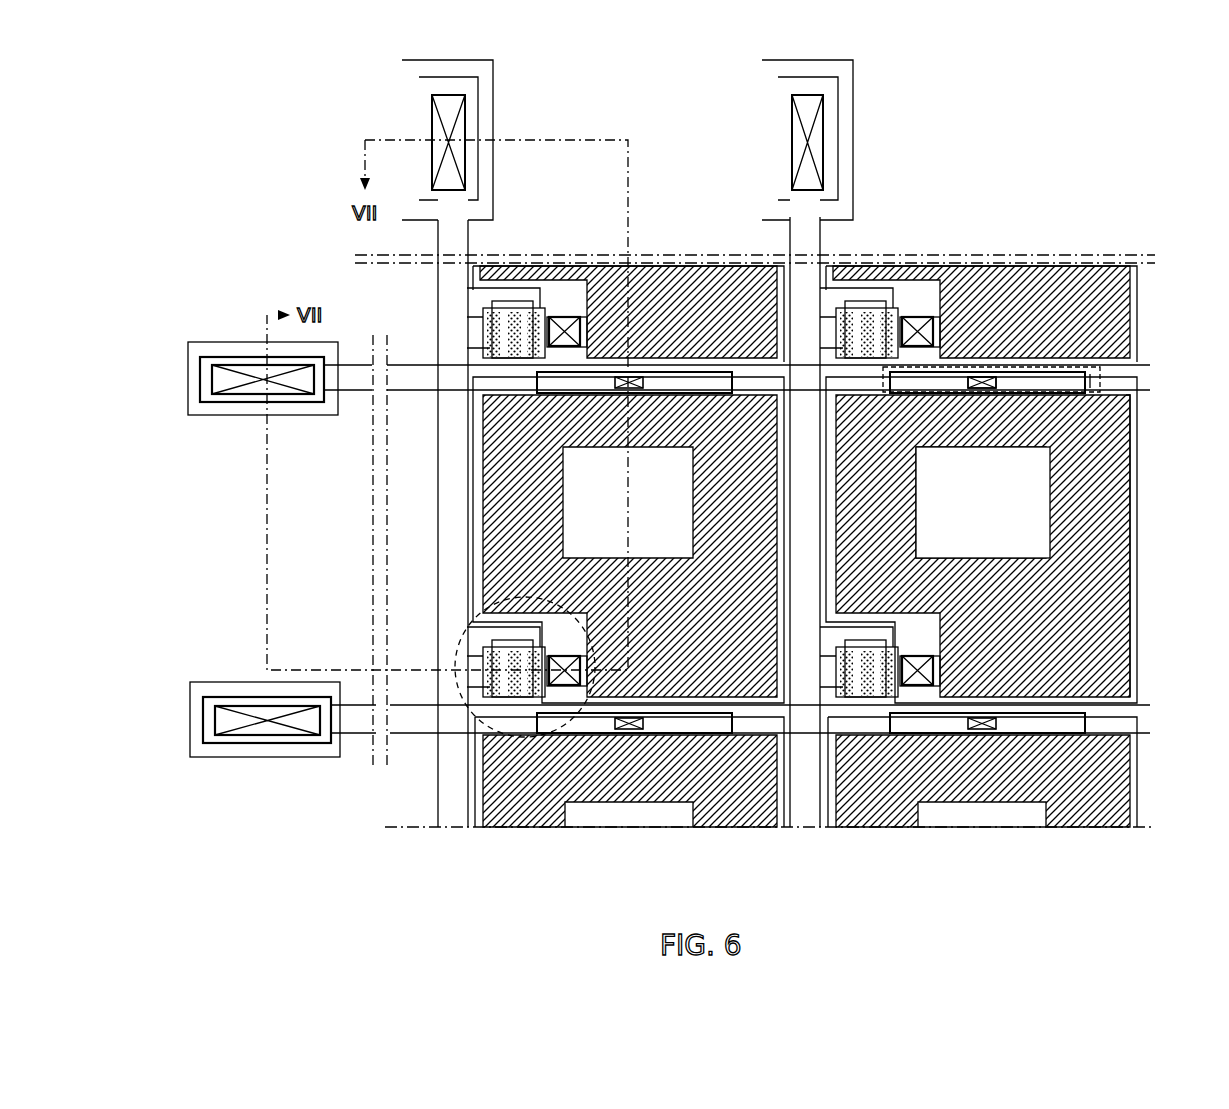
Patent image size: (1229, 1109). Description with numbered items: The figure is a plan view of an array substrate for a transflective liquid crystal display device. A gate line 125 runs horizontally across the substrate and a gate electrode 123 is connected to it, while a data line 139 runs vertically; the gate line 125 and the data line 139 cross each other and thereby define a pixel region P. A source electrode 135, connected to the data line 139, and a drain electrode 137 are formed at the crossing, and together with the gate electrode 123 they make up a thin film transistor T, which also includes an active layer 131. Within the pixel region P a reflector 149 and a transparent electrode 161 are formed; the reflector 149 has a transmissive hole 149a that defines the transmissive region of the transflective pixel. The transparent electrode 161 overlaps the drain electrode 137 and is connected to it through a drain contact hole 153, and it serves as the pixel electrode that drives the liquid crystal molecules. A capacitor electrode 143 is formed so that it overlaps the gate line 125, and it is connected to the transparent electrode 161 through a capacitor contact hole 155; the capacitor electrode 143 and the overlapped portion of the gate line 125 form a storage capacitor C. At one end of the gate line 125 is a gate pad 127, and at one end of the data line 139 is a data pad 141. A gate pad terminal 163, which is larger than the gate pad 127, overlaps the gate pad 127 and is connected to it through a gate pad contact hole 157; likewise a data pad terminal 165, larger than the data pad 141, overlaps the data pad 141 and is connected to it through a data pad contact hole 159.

The gate electrode 123 is at (488, 632).
The gate line 125 is at (366, 735).
The gate pad 127 is at (292, 402).
The active layer 131 is at (520, 700).
The source electrode 135 is at (500, 735).
The drain electrode 137 is at (578, 690).
The data line 139 is at (438, 578).
The data pad 141 is at (480, 118).
The capacitor electrode 143 is at (1038, 367).
The reflector 149 is at (480, 437).
The transmissive hole 149a is at (1055, 534).
The drain contact hole 153 is at (572, 645).
The capacitor contact hole 155 is at (640, 735).
The gate pad contact hole 157 is at (218, 400).
The data pad contact hole 159 is at (422, 113).
The transparent electrode 161 is at (475, 505).
The gate pad terminal 163 is at (226, 342).
The data pad terminal 165 is at (493, 190).
The storage capacitor C is at (1090, 381).
The pixel region P is at (1095, 442).
The thin film transistor T is at (458, 700).